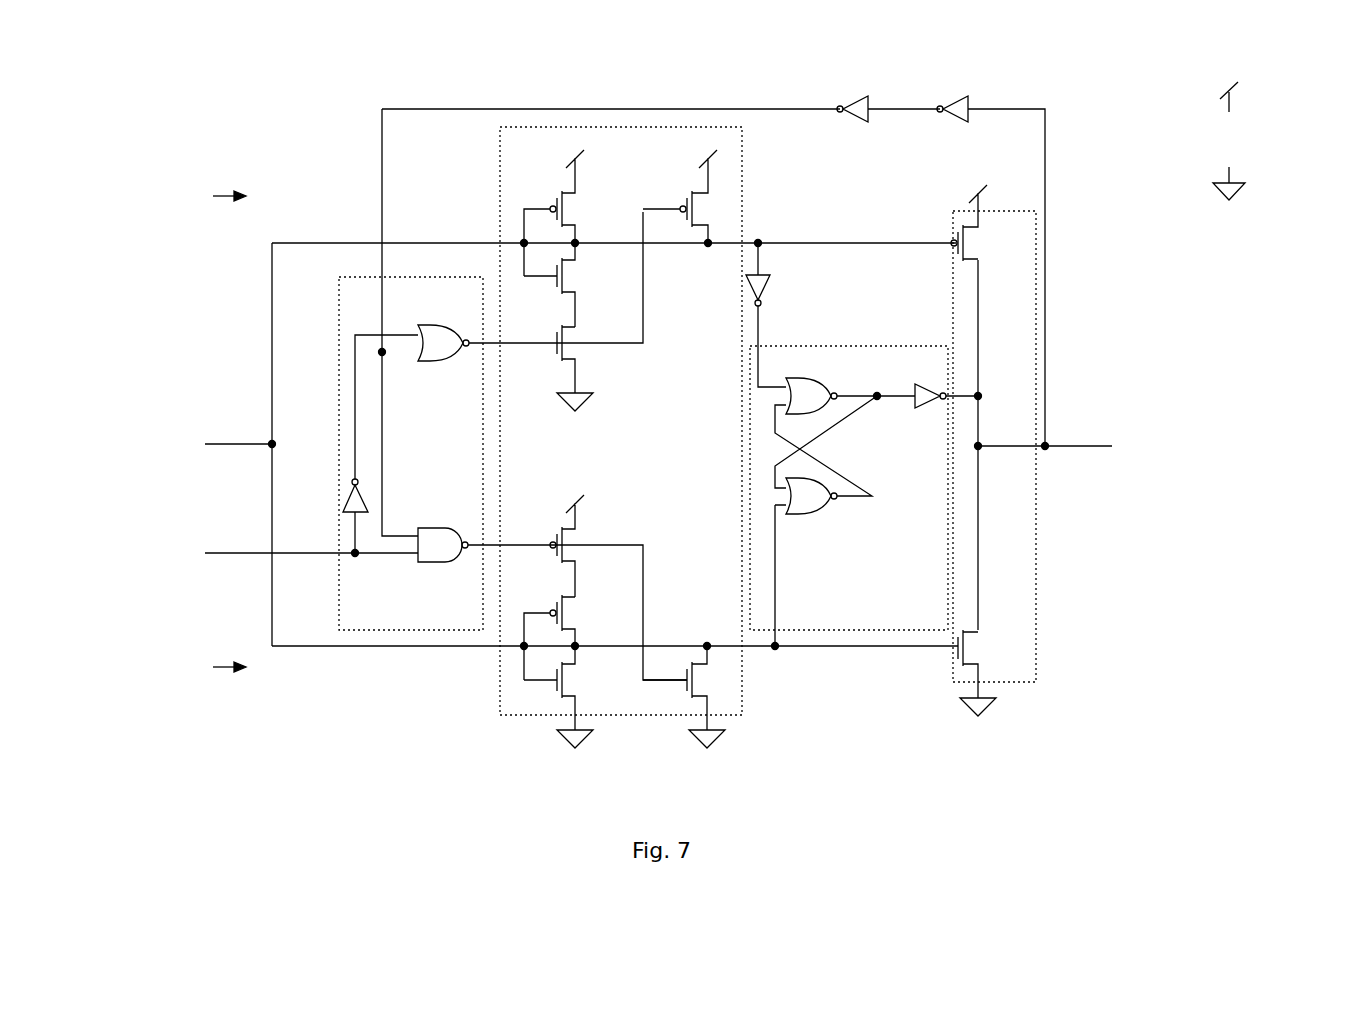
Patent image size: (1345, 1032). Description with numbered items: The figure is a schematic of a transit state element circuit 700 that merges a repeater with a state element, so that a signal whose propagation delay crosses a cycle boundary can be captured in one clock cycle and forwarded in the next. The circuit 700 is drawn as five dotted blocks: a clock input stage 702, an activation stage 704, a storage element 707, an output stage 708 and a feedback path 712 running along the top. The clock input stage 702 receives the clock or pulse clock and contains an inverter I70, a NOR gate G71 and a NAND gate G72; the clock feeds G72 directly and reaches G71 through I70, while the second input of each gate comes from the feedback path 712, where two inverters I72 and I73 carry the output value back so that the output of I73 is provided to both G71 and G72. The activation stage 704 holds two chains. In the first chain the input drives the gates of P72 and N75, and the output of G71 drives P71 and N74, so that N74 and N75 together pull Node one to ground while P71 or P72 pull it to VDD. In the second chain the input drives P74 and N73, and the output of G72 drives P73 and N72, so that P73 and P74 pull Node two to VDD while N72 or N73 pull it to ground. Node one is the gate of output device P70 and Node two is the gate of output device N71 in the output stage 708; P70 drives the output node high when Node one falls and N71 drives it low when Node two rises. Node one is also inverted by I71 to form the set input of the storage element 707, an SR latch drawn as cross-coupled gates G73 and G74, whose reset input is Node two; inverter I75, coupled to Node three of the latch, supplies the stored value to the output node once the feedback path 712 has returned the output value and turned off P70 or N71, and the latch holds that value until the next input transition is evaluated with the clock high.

The transit state element circuit 700 is at (429, 34).
The clock input stage 702 is at (415, 632).
The activation stage 704 is at (520, 718).
The storage element 707 is at (883, 632).
The output stage 708 is at (1036, 683).
The feedback path 712 is at (750, 95).
The inverter I70 is at (336, 495).
The inverter I71 is at (776, 315).
The inverter I72 is at (948, 124).
The inverter I73 is at (848, 124).
The inverter I75 is at (947, 382).
The NOR logic gate G71 is at (443, 358).
The NAND logic gate G72 is at (443, 561).
The NOR gate G73 is at (850, 383).
The NOR gate G74 is at (826, 521).
The output device transistor P70 is at (985, 223).
The transistor P71 is at (692, 196).
The transistor P72 is at (570, 213).
The transistor P73 is at (583, 546).
The transistor P74 is at (570, 637).
The output device transistor N71 is at (989, 673).
The transistor N72 is at (694, 697).
The transistor N73 is at (571, 697).
The transistor N74 is at (587, 368).
The transistor N75 is at (571, 285).